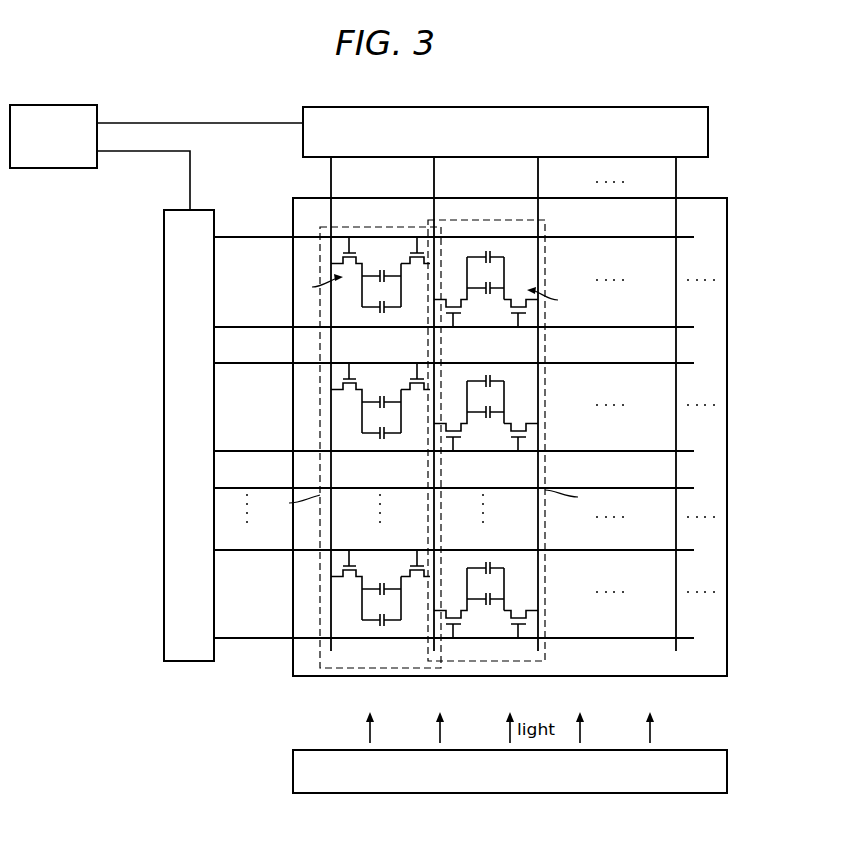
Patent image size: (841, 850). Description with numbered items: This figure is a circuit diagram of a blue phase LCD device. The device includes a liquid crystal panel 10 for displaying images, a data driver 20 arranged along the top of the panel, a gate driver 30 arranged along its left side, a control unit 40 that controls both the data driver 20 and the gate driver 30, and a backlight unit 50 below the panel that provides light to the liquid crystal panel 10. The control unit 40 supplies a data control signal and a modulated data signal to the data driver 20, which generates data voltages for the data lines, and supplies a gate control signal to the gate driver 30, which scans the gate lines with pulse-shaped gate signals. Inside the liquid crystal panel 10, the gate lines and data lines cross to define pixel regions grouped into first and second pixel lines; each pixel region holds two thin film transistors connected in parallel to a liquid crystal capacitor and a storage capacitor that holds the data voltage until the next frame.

The liquid crystal panel 10 is at (712, 198).
The data driver 20 is at (485, 107).
The gate driver 30 is at (164, 352).
The control unit 40 is at (63, 104).
The backlight unit 50 is at (293, 770).